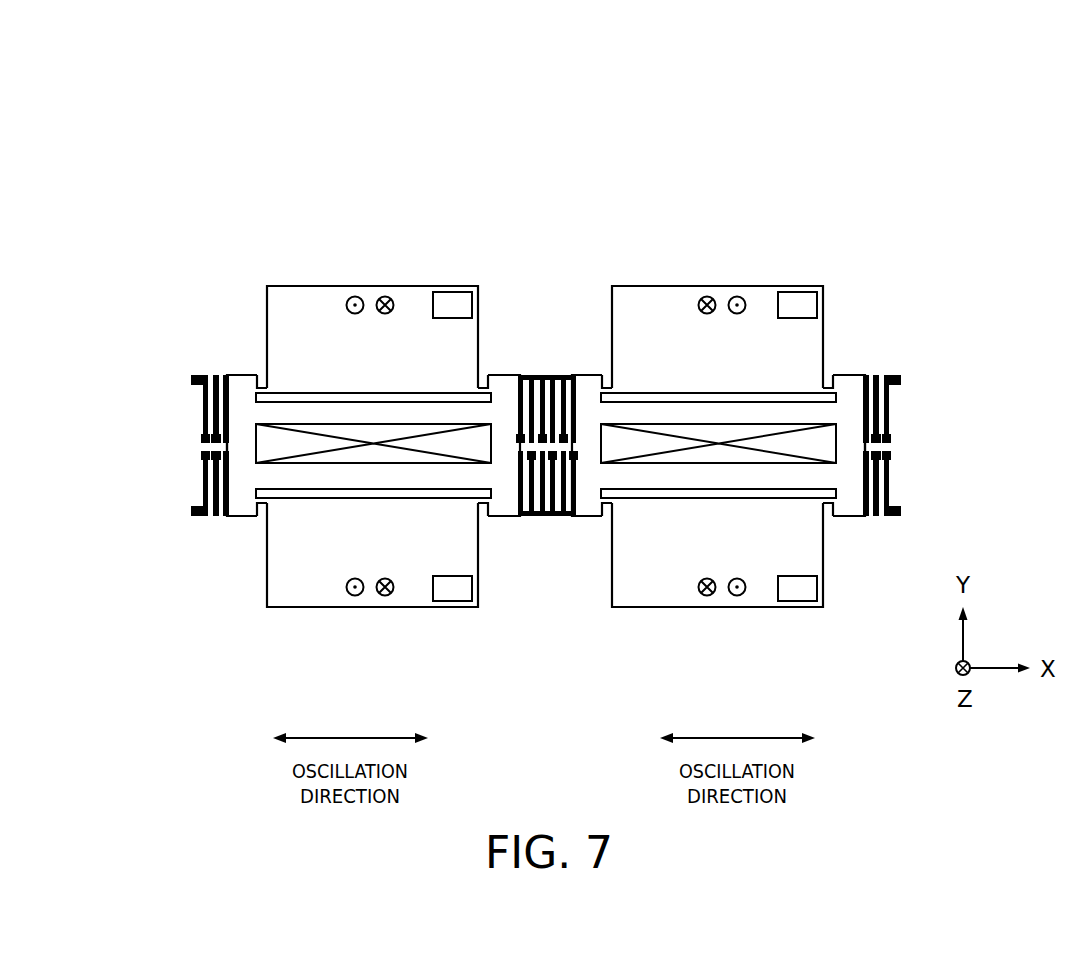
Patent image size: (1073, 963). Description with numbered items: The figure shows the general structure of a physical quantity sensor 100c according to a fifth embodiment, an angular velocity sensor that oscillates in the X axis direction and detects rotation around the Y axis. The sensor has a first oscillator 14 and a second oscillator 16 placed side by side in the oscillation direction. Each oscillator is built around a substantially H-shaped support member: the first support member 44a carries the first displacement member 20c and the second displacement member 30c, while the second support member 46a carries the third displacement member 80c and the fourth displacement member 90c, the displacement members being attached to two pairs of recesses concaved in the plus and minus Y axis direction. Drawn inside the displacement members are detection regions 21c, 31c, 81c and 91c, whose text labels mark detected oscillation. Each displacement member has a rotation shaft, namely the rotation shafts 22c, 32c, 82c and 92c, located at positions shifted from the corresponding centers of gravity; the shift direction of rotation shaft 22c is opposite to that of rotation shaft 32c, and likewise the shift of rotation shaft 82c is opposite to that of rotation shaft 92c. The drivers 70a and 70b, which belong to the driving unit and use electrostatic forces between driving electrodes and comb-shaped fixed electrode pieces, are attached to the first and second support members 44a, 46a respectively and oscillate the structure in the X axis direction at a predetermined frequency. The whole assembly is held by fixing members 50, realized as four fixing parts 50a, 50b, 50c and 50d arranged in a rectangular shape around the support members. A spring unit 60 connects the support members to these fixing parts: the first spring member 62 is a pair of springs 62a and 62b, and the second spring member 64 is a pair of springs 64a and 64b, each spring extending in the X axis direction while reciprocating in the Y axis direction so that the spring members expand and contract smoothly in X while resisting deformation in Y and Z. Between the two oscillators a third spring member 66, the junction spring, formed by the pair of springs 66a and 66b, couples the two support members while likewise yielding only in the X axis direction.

The physical quantity sensor 100c is at (609, 98).
The first oscillator 14 is at (243, 385).
The second oscillator 16 is at (848, 385).
The first displacement member 20c is at (300, 600).
The first detection electrode 21c is at (412, 592).
The rotation shaft 22c is at (263, 508).
The second displacement member 30c is at (284, 293).
The second detection electrode 31c is at (411, 307).
The rotation shaft 32c is at (262, 383).
The first support member 44a is at (240, 490).
The second support member 46a is at (848, 477).
The fixing members 50 is at (522, 454).
The fixing part 50a is at (193, 377).
The fixing part 50b is at (195, 518).
The fixing part 50c is at (897, 376).
The fixing part 50d is at (897, 513).
The spring unit 60 is at (988, 415).
The first spring member 62 is at (905, 432).
The spring 62a is at (887, 405).
The spring 62b is at (203, 413).
The second spring member 64 is at (905, 464).
The spring 64a is at (887, 485).
The spring 64b is at (203, 487).
The third spring member 66 is at (547, 245).
The spring 66a is at (548, 375).
The spring 66b is at (548, 520).
The driver 70a is at (375, 450).
The driver 70b is at (720, 450).
The third displacement member 80c is at (645, 600).
The third detection electrode 81c is at (755, 592).
The rotation shaft 82c is at (607, 512).
The fourth displacement member 90c is at (644, 293).
The fourth detection electrode 91c is at (757, 307).
The rotation shaft 92c is at (609, 383).